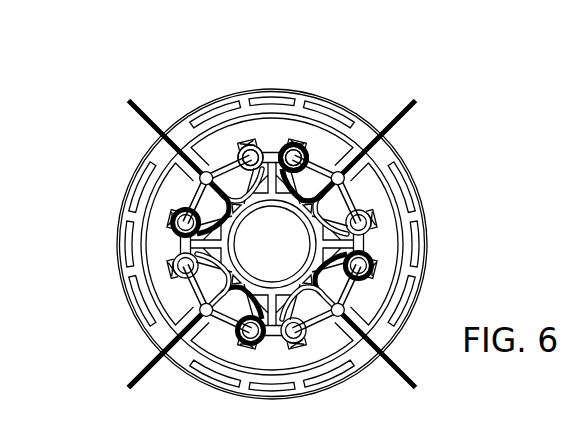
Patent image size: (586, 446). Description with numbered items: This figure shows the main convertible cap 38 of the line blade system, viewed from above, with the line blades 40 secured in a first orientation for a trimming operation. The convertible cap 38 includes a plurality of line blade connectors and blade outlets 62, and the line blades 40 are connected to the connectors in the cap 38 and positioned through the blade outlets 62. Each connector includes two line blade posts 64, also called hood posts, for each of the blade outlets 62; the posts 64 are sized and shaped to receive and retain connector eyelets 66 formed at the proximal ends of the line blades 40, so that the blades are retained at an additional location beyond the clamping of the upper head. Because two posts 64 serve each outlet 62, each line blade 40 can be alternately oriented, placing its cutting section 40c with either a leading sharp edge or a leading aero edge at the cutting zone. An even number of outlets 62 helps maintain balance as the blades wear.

The main convertible cap 38 is at (118, 292).
The line blades 40 is at (133, 115).
The cutting section 40c is at (103, 349).
The blade outlets 62 is at (367, 355).
The line blade posts 64 is at (293, 152).
The connector eyelets 66 is at (310, 155).